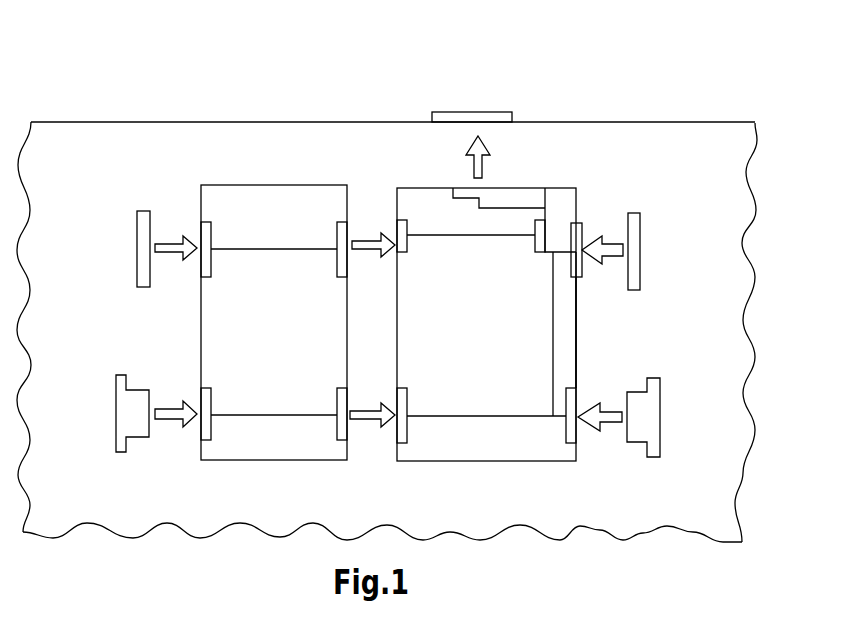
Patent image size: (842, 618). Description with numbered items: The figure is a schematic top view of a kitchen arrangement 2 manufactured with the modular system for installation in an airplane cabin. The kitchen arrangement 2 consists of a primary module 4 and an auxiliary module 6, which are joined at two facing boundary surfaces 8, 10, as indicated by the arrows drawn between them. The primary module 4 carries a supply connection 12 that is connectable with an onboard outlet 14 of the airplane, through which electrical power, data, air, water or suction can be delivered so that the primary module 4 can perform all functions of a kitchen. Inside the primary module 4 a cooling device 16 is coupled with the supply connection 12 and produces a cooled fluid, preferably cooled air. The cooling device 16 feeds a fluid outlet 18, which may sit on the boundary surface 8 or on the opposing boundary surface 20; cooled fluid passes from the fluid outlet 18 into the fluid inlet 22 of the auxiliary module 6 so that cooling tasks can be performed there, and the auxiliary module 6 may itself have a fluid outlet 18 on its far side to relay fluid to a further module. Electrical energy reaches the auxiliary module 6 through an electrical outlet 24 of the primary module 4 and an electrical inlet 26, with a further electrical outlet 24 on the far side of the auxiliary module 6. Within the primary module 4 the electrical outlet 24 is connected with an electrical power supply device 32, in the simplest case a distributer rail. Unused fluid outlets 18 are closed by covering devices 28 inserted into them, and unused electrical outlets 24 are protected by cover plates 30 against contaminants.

The kitchen arrangement 2 is at (660, 100).
The primary module 4 is at (577, 318).
The auxiliary module 6 is at (302, 456).
The boundary surface 8 is at (407, 326).
The boundary surface 10 is at (336, 315).
The supply connection 12 is at (496, 190).
The onboard outlet 14 is at (486, 112).
The cooling device 16 is at (573, 197).
The fluid outlet 18 is at (205, 388).
The boundary surface 20 is at (588, 356).
The fluid inlet 22 is at (342, 400).
The electrical outlet 24 is at (210, 237).
The electrical inlet 26 is at (345, 222).
The covering device 28 is at (116, 410).
The cover plate 30 is at (137, 248).
The electrical power supply device 32 is at (541, 255).